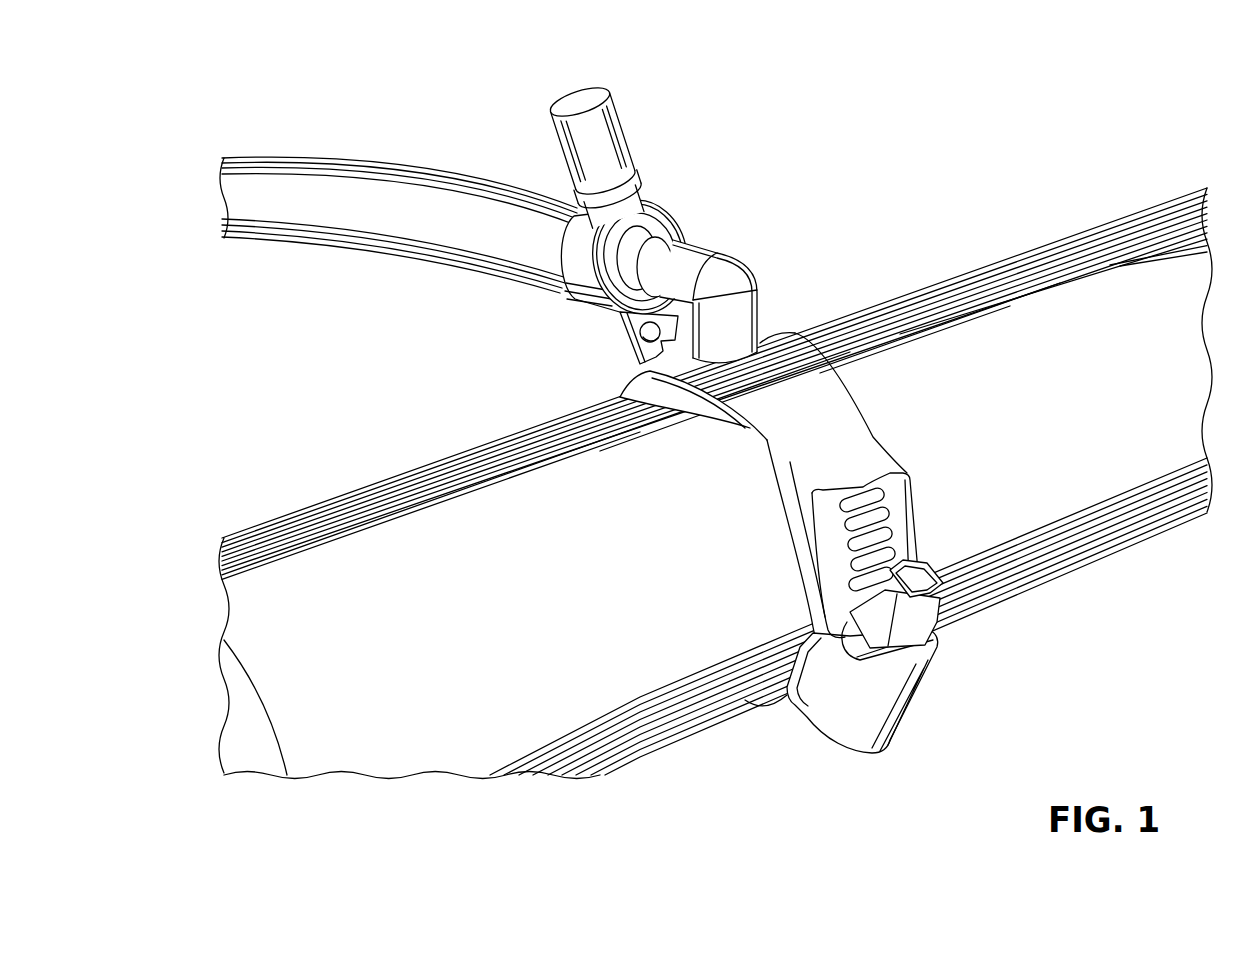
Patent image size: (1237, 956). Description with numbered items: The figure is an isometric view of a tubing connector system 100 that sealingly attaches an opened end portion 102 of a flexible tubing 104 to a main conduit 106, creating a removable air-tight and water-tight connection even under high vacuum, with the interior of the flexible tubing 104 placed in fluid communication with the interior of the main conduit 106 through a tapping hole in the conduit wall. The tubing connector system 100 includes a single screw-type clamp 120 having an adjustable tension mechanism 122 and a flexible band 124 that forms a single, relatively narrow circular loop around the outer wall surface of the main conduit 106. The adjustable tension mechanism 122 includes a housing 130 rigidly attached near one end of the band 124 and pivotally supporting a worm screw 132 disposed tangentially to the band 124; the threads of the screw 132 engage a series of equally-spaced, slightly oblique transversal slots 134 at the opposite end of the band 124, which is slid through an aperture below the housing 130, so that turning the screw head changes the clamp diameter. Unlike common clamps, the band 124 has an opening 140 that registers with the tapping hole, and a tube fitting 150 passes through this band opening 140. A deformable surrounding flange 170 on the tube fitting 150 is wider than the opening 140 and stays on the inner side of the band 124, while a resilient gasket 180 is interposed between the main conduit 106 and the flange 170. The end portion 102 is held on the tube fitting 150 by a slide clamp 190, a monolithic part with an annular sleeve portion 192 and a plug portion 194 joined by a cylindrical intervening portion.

The tubing connector system 100 is at (840, 445).
The opened end portion 102 is at (715, 420).
The flexible tubing 104 is at (328, 200).
The main conduit 106 is at (318, 538).
The screw-type clamp 120 is at (958, 509).
The adjustable tension mechanism 122 is at (993, 617).
The flexible band 124 is at (856, 456).
The housing 130 is at (887, 747).
The worm screw 132 is at (920, 622).
The transversal slots 134 is at (900, 511).
The opening 140 is at (775, 337).
The tube fitting 150 is at (710, 224).
The deformable surrounding flange 170 is at (647, 371).
The resilient gasket 180 is at (622, 394).
The slide clamp 190 is at (680, 224).
The annular sleeve portion 192 is at (683, 213).
The plug portion 194 is at (603, 137).